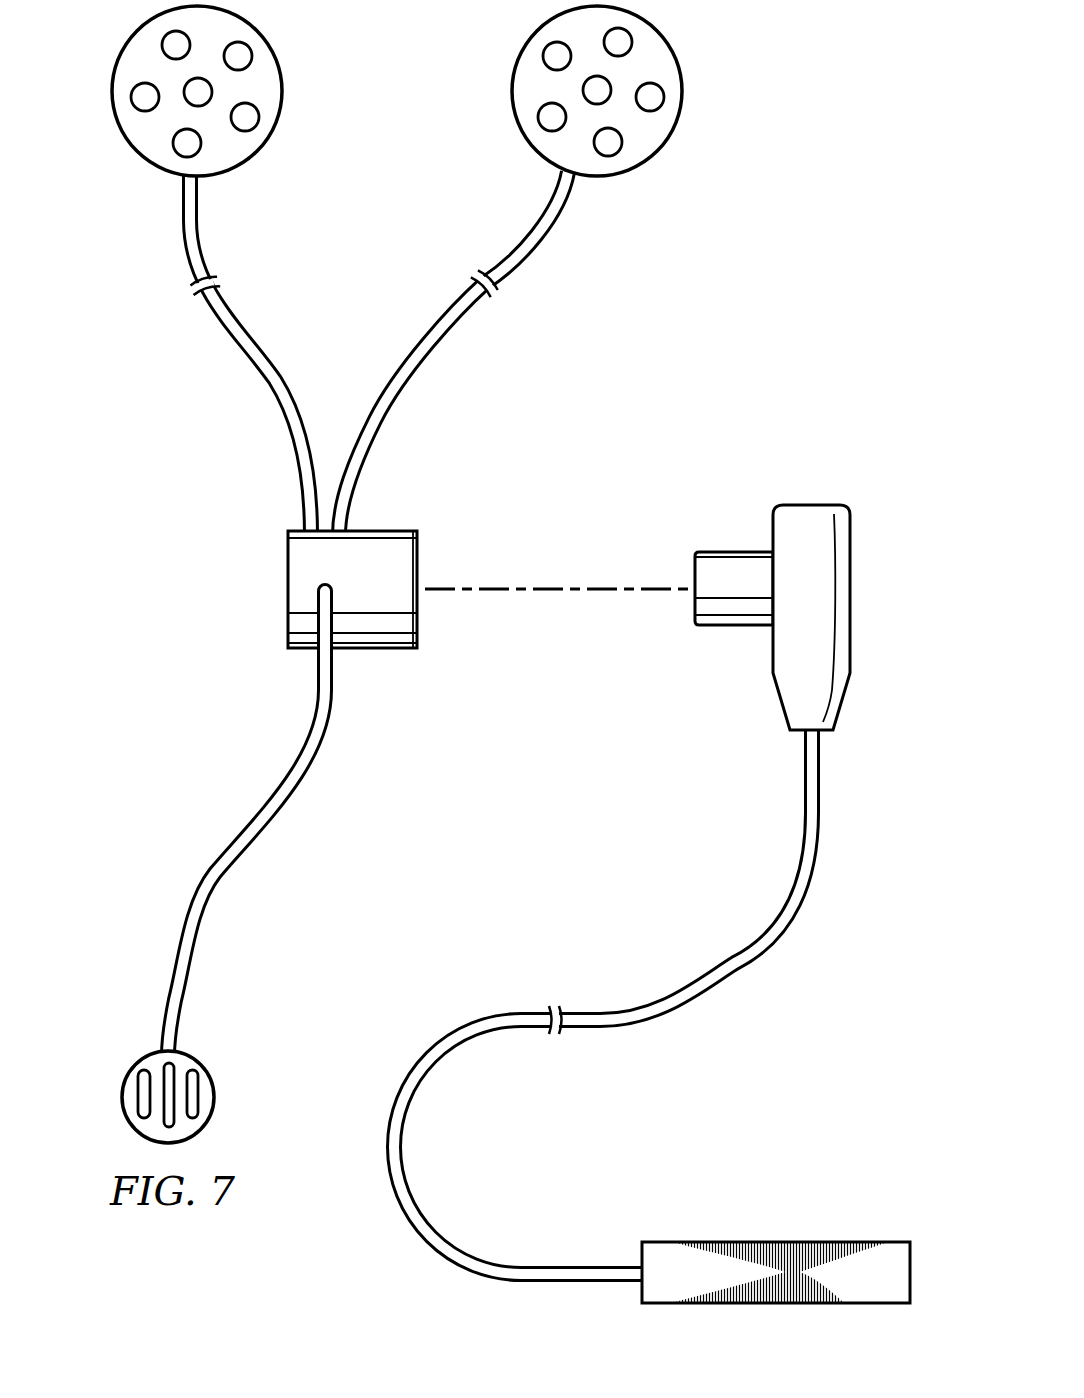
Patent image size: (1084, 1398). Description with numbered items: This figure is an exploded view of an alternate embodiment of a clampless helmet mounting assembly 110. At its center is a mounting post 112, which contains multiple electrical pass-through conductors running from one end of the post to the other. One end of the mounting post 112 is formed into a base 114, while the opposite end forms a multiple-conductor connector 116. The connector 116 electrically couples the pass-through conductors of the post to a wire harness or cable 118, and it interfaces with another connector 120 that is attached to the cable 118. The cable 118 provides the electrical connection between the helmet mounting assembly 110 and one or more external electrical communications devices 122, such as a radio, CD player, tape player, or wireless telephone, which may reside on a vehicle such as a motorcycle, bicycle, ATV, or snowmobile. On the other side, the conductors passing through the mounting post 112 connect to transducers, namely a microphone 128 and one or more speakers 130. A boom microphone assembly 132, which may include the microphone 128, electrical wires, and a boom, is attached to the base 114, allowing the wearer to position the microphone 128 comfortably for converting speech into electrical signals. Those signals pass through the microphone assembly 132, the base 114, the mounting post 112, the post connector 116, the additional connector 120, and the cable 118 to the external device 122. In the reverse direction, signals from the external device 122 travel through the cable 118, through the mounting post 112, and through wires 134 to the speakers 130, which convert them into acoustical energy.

The clampless helmet mounting assembly 110 is at (795, 213).
The mounting post 112 is at (385, 530).
The base 114 is at (288, 549).
The multiple-conductor connector 116 is at (427, 627).
The cable 118 is at (738, 948).
The connector 120 is at (815, 505).
The external electrical communications device 122 is at (692, 1242).
The microphone 128 is at (214, 1094).
The speakers 130 is at (128, 49).
The boom microphone assembly 132 is at (198, 907).
The wires 134 is at (184, 232).